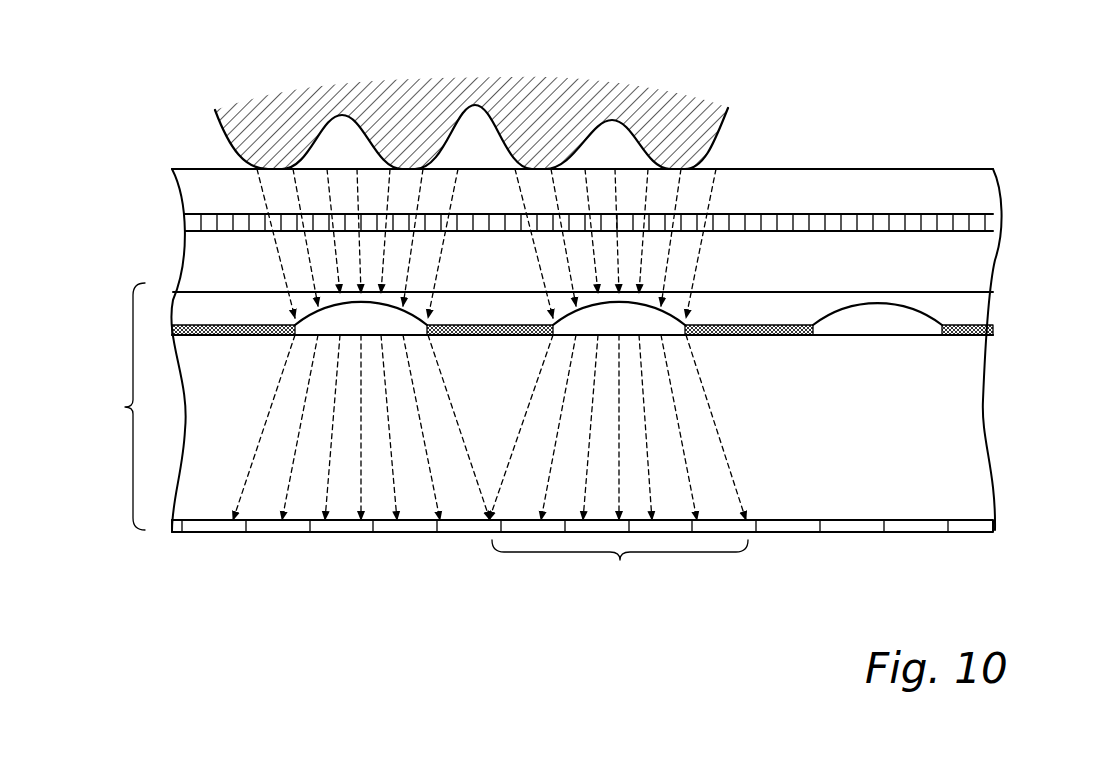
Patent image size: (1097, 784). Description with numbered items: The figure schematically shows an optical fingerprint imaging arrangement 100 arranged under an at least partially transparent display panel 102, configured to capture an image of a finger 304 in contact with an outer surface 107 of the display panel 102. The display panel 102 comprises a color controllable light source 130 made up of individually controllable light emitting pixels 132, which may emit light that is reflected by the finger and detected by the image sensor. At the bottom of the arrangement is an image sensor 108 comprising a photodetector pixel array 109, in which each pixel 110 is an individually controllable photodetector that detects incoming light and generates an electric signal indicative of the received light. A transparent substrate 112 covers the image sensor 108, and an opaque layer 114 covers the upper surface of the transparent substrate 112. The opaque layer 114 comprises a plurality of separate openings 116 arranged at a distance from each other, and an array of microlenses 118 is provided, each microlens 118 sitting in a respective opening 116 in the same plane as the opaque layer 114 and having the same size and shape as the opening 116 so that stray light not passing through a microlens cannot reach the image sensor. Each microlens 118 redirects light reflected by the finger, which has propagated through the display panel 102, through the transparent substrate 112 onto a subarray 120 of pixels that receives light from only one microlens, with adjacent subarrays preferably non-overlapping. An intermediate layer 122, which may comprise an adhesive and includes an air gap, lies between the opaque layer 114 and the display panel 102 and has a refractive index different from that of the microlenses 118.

The finger 304 is at (540, 108).
The display panel 102 is at (187, 203).
The outer surface 107 is at (778, 169).
The color controllable light source 130 is at (993, 222).
The light emitting pixels 132 is at (908, 222).
The intermediate layer 122 is at (192, 302).
The opaque layer 114 is at (248, 325).
The microlenses 118 is at (667, 320).
The openings 116 is at (896, 340).
The transparent substrate 112 is at (950, 433).
The pixel 110 is at (223, 532).
The photodetector pixel array 109 is at (208, 520).
The image sensor 108 is at (172, 530).
The optical fingerprint imaging arrangement 100 is at (107, 406).
The subarray of pixels 120 is at (620, 573).